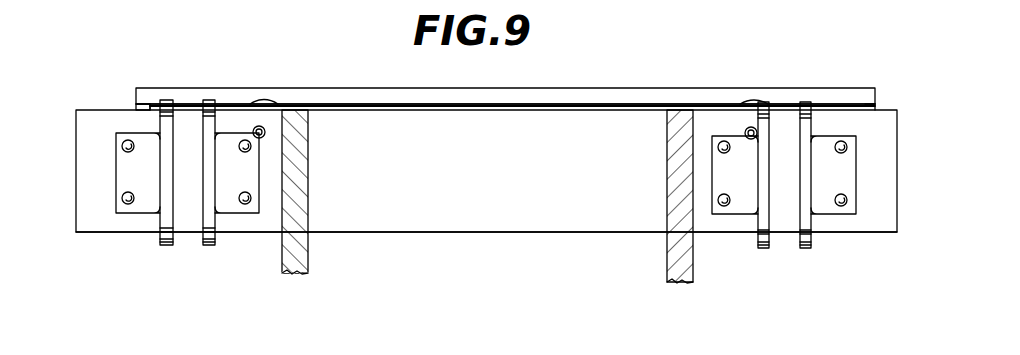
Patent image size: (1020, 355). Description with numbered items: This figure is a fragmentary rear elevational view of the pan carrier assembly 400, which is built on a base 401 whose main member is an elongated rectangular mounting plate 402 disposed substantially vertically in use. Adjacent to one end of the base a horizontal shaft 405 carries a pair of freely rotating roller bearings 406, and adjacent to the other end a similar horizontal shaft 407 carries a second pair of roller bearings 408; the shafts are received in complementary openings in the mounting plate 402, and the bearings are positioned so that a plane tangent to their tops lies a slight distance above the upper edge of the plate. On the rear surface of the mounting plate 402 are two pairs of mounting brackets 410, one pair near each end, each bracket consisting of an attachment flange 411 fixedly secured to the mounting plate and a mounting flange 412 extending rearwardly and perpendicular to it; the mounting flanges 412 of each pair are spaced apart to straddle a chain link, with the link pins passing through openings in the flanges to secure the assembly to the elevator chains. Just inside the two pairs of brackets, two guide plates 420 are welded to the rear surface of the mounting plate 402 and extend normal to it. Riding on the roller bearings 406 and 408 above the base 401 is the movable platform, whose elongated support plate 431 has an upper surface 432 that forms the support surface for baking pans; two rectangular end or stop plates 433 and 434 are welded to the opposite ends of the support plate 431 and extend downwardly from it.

The pan carrier assembly 400 is at (338, 50).
The base 401 is at (338, 238).
The mounting plate 402 is at (477, 215).
The horizontal shaft 405 is at (746, 127).
The roller bearings 406 is at (749, 105).
The horizontal shaft 407 is at (256, 125).
The roller bearings 408 is at (268, 105).
The mounting brackets 410 is at (206, 256).
The attachment flange 411 is at (117, 202).
The mounting flange 412 is at (212, 192).
The guide plates 420 is at (303, 183).
The support plate 431 is at (607, 95).
The upper surface 432 is at (412, 88).
The end or stop plate 433 is at (875, 108).
The end or stop plate 434 is at (140, 107).